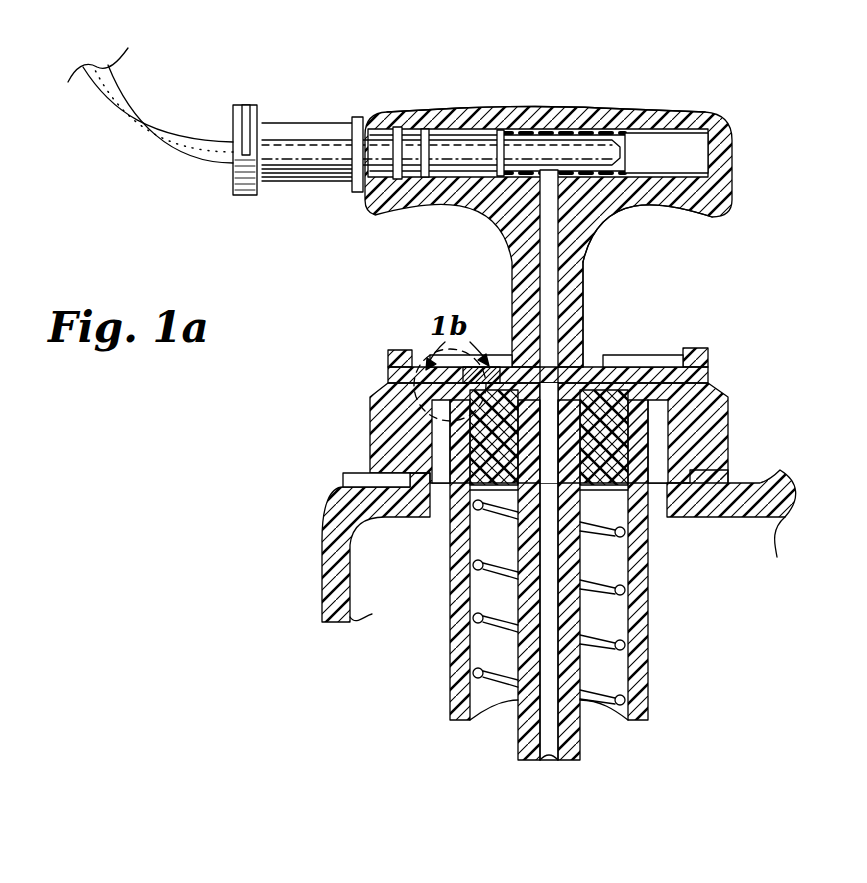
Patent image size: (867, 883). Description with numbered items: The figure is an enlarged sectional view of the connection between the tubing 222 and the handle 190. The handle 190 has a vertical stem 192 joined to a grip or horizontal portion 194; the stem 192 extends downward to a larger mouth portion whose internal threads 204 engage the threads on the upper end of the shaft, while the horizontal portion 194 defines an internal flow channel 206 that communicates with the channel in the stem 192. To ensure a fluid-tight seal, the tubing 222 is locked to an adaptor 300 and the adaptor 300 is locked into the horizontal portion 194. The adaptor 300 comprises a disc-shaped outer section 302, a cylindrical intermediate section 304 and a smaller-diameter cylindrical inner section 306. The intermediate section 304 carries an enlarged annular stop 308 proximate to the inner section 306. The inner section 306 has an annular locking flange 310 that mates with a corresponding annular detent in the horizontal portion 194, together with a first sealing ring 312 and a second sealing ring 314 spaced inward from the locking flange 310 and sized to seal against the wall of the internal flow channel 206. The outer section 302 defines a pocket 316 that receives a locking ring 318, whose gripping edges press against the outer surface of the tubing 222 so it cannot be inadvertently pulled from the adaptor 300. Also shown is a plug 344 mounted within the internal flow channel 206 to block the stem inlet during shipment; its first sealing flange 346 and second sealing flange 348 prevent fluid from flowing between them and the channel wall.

The handle 190 is at (584, 266).
The vertical stem 192 is at (584, 323).
The horizontal portion 194 is at (570, 108).
The internal threads 204 is at (548, 292).
The internal flow channel 206 is at (688, 150).
The tubing 222 is at (100, 98).
The adaptor 300 is at (288, 188).
The disc-shaped outer section 302 is at (258, 112).
The cylindrical intermediate section 304 is at (313, 182).
The cylindrical inner section 306 is at (462, 130).
The annular stop 308 is at (358, 118).
The annular locking flange 310 is at (412, 135).
The first sealing ring 312 is at (418, 178).
The second sealing ring 314 is at (504, 133).
The pocket 316 is at (248, 104).
The locking ring 318 is at (243, 135).
The plug 344 is at (605, 132).
The first sealing flange 346 is at (590, 180).
The second sealing flange 348 is at (650, 128).